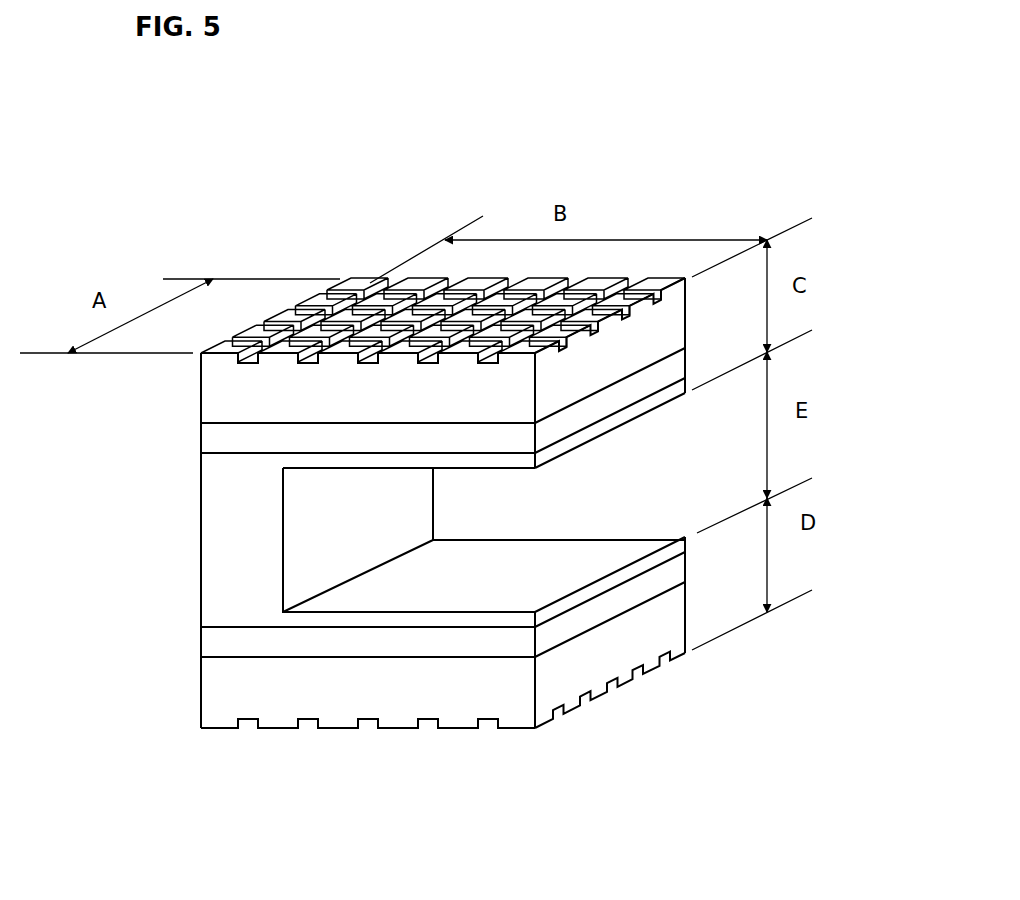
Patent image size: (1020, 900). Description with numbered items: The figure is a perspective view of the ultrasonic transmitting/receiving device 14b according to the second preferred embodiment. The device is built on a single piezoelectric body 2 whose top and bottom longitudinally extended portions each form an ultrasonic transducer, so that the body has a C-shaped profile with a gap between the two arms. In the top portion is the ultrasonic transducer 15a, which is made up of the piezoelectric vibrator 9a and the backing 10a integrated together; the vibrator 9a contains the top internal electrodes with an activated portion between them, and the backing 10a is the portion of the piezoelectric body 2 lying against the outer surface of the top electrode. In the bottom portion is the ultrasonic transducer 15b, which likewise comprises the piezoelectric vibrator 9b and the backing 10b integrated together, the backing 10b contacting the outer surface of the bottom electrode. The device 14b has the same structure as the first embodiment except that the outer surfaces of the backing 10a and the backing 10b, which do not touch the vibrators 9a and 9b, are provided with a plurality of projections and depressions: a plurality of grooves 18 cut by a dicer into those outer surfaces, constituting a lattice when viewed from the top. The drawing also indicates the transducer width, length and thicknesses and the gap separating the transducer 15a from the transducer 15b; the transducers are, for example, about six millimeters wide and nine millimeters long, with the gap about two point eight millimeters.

The ultrasonic transmitting/receiving device 14b is at (124, 236).
The piezoelectric body 2 is at (215, 398).
The grooves 18 is at (372, 283).
The ultrasonic transducer 15a is at (641, 268).
The ultrasonic transducer 15b is at (694, 659).
The piezoelectric vibrator 9a is at (692, 362).
The piezoelectric vibrator 9b is at (692, 568).
The backing 10a is at (607, 357).
The backing 10b is at (613, 648).